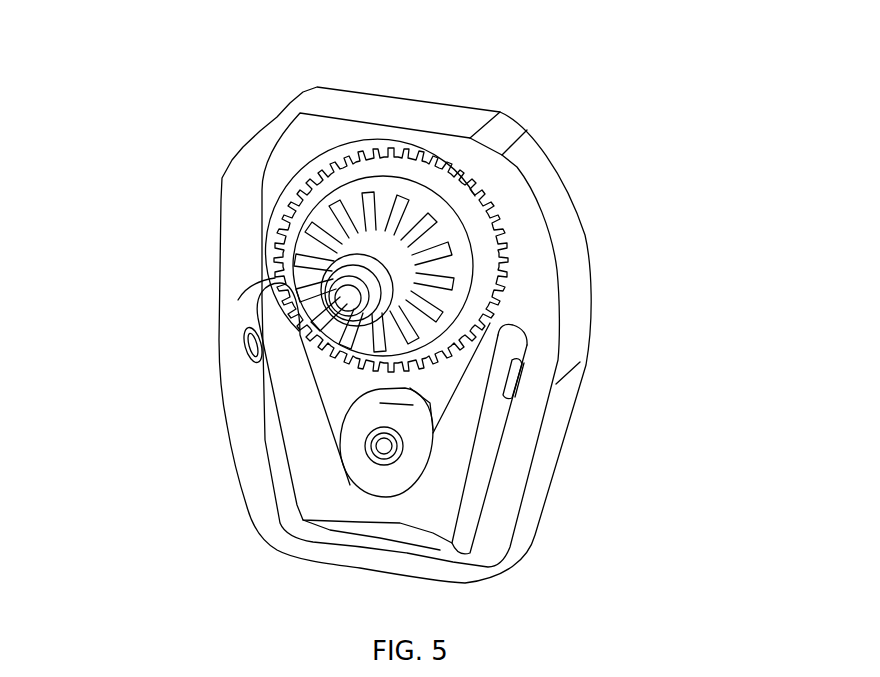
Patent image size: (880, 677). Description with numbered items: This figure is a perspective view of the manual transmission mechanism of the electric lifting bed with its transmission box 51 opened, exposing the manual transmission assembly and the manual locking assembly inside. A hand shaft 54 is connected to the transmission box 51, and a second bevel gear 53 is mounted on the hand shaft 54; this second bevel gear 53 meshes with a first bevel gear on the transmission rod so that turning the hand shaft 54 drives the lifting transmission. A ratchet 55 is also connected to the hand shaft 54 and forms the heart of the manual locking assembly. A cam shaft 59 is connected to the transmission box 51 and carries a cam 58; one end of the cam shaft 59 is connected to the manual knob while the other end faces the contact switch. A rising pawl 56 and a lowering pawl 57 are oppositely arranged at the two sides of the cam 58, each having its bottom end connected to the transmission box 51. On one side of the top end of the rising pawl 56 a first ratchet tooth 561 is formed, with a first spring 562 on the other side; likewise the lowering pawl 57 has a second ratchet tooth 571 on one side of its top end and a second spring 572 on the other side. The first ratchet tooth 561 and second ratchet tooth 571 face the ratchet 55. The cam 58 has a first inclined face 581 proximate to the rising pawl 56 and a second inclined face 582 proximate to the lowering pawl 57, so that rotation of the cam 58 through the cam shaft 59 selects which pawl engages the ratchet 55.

The transmission box 51 is at (408, 118).
The second bevel gear 53 is at (447, 250).
The hand shaft 54 is at (350, 298).
The ratchet 55 is at (407, 200).
The rising pawl 56 is at (447, 448).
The first ratchet tooth 561 is at (530, 330).
The first spring 562 is at (523, 377).
The lowering pawl 57 is at (303, 437).
The second ratchet tooth 571 is at (268, 300).
The second spring 572 is at (243, 330).
The cam 58 is at (353, 467).
The first inclined face 581 is at (423, 413).
The second inclined face 582 is at (413, 405).
The cam shaft 59 is at (387, 443).